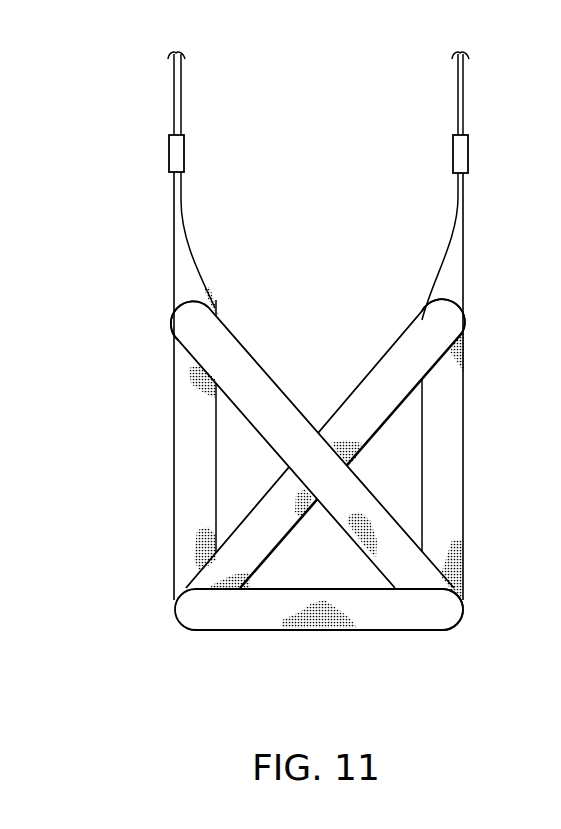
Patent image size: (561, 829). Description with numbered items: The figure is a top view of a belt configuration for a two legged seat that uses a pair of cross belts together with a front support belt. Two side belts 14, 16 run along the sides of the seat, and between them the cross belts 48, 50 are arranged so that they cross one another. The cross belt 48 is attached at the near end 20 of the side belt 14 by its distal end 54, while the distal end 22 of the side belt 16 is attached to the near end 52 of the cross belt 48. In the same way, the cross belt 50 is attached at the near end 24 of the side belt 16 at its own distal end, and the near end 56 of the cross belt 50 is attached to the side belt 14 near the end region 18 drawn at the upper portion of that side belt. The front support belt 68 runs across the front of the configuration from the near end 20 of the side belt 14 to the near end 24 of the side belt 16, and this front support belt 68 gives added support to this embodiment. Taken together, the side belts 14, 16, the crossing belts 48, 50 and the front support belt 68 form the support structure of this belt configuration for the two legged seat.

The side belt 14 is at (174, 447).
The side belt 16 is at (465, 443).
The first curved wire portion 18 is at (174, 347).
The near end 20 is at (180, 581).
The distal end 22 is at (465, 334).
The near end 24 is at (465, 573).
The cross belt 48 is at (207, 572).
The cross belt 50 is at (432, 573).
The near end 52 is at (444, 311).
The distal end 54 is at (190, 622).
The near end 56 is at (188, 315).
The front support belt 68 is at (312, 630).